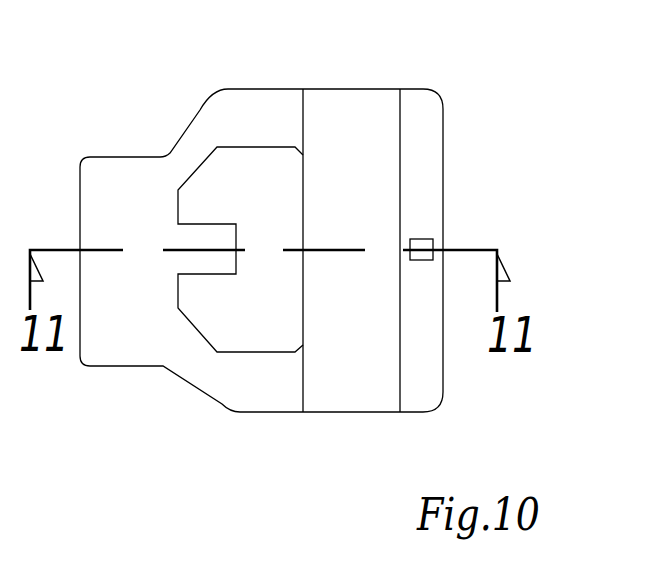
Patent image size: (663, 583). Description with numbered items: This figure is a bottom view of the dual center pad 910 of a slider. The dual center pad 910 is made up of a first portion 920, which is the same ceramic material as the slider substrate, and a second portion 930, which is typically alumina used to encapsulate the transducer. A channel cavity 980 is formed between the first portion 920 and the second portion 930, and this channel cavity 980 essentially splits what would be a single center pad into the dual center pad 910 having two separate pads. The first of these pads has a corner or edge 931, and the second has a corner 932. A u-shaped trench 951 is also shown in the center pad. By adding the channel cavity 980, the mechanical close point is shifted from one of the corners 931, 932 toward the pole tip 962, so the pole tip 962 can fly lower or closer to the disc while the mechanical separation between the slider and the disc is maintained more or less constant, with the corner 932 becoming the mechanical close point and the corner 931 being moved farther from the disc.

The dual center pad 910 is at (140, 112).
The first portion 920 is at (215, 373).
The second portion 930 is at (433, 375).
The corner 931 is at (304, 107).
The corner 932 is at (443, 124).
The trench 951 is at (243, 160).
The pole tip 962 is at (420, 243).
The channel cavity 980 is at (353, 403).